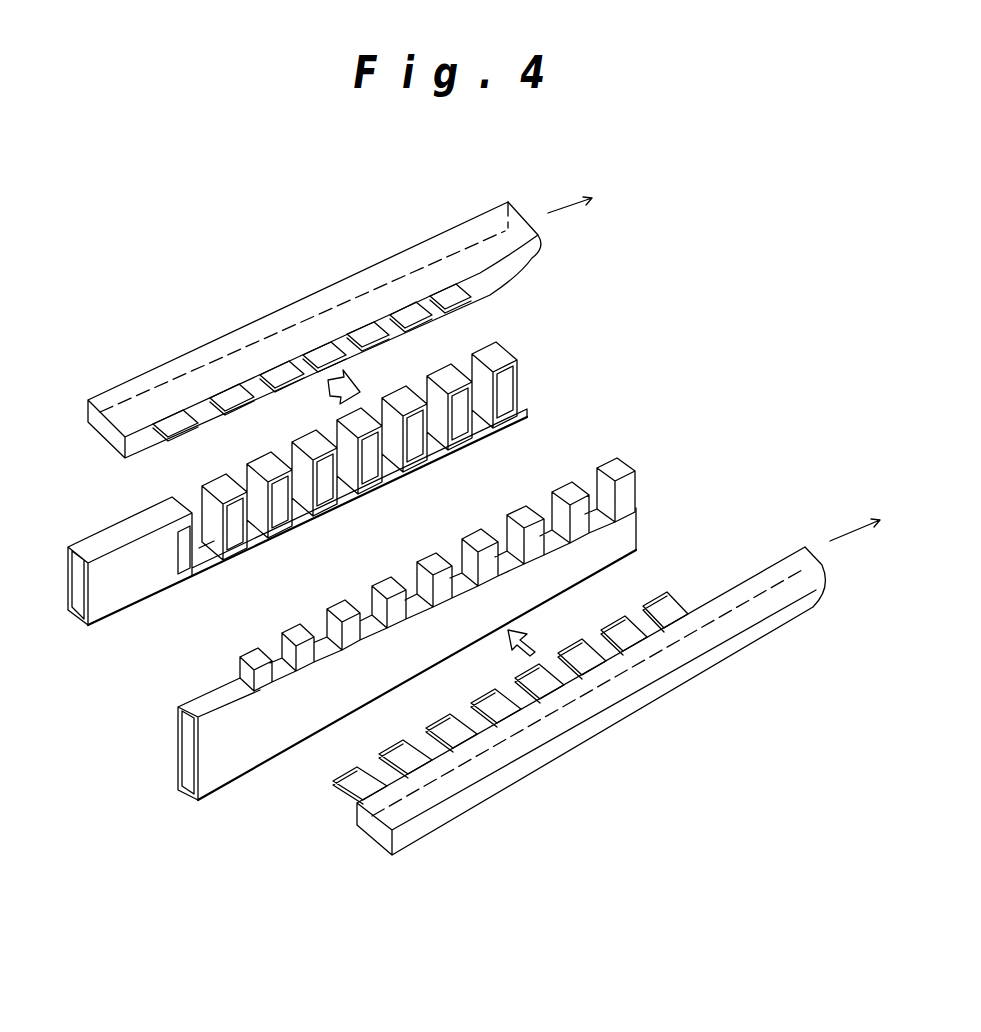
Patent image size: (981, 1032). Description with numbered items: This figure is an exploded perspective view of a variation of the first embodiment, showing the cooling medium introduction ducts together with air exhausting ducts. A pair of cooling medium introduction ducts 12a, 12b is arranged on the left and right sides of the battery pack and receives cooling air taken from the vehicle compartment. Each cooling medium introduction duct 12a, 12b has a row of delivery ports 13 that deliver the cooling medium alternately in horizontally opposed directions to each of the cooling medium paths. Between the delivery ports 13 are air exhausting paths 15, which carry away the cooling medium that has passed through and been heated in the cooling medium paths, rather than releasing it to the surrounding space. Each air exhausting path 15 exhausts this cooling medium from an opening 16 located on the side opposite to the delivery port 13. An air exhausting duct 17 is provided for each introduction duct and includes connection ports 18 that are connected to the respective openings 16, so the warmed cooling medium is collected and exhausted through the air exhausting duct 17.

The cooling medium introduction duct 12a is at (112, 530).
The cooling medium introduction duct 12b is at (227, 760).
The delivery port 13 is at (503, 392).
The air exhausting path 15 is at (203, 555).
The opening 16 is at (462, 355).
The air exhausting duct 17 is at (290, 332).
The connection port 18 is at (173, 406).